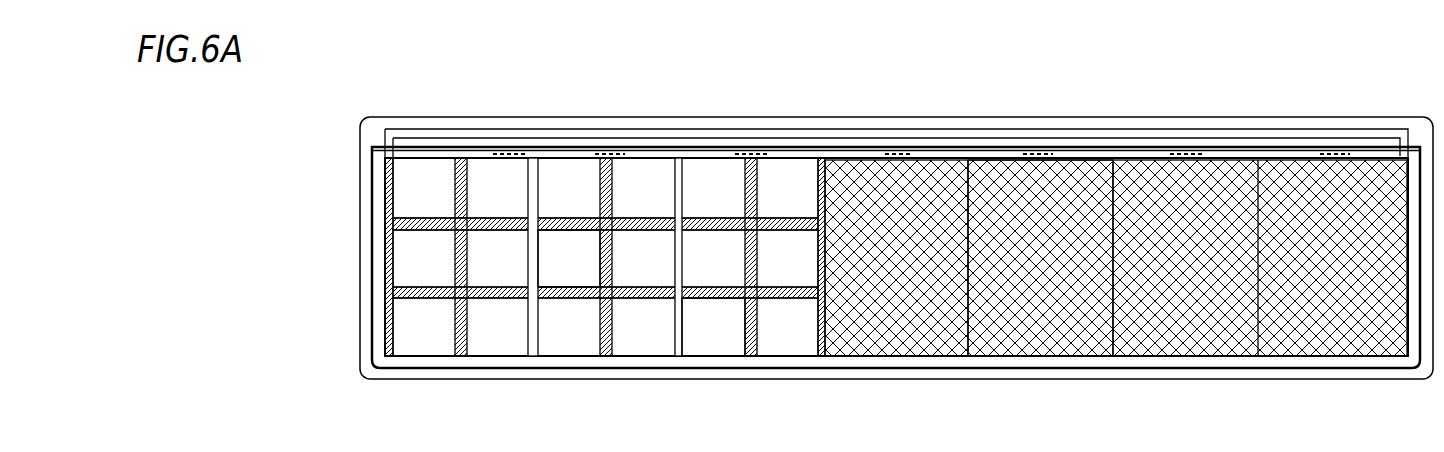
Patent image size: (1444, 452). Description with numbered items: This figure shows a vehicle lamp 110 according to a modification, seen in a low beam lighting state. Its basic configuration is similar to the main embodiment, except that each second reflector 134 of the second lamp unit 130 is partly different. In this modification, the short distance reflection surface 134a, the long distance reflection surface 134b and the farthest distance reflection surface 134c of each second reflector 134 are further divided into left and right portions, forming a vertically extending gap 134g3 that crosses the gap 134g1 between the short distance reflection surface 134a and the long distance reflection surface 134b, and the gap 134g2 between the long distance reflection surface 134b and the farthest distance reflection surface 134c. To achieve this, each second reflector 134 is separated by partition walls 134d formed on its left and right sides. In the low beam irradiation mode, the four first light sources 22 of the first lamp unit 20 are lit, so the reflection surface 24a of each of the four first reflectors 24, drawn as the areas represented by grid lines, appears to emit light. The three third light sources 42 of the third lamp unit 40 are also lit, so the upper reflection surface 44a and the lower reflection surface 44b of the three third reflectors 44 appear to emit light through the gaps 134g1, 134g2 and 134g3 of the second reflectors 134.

The vehicle lamp 110 is at (432, 98).
The first lamp unit 20 is at (1140, 135).
The first light source 22 is at (902, 145).
The third lamp unit 40 is at (570, 125).
The second lamp unit 130 is at (707, 125).
The second reflector 134 is at (508, 360).
The short distance reflection surface 134a is at (417, 187).
The long distance reflection surface 134b is at (417, 252).
The farthest distance reflection surface 134c is at (417, 320).
The partition wall 134d is at (531, 197).
The gap 134g1 is at (393, 223).
The gap 134g2 is at (393, 290).
The vertically extending gap 134g3 is at (455, 183).
The third light source 42 is at (467, 150).
The third reflector 44 is at (473, 358).
The upper reflection surface 44a is at (563, 230).
The lower reflection surface 44b is at (703, 297).
The first reflector 24 is at (933, 357).
The reflection surface 24a is at (1040, 340).